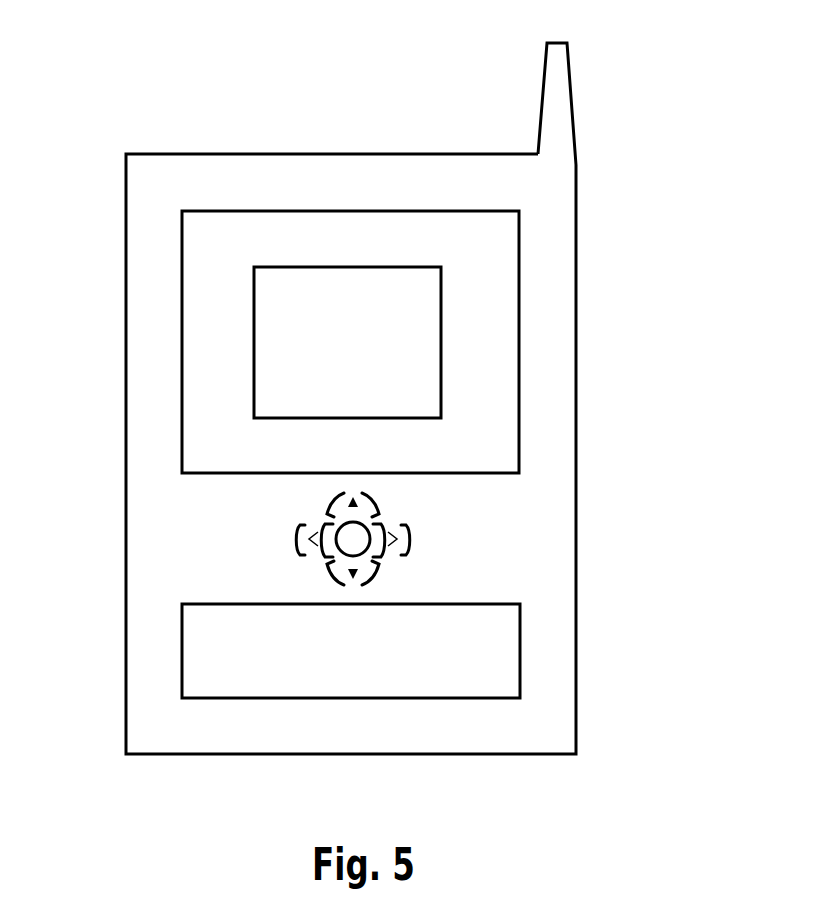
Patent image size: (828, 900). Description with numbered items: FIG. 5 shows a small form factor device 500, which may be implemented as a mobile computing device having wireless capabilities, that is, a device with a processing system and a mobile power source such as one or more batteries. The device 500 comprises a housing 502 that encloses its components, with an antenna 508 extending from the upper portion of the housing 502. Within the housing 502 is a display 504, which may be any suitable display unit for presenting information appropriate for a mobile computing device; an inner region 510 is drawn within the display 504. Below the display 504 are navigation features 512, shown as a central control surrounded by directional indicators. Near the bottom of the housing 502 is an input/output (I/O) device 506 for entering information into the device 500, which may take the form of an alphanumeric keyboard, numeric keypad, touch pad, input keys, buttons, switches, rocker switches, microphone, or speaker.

The small form factor device 500 is at (136, 53).
The housing 502 is at (576, 455).
The display 504 is at (520, 232).
The input/output (I/O) device 506 is at (520, 642).
The antenna 508 is at (541, 92).
The display window 510 is at (441, 366).
The navigation features 512 is at (444, 530).